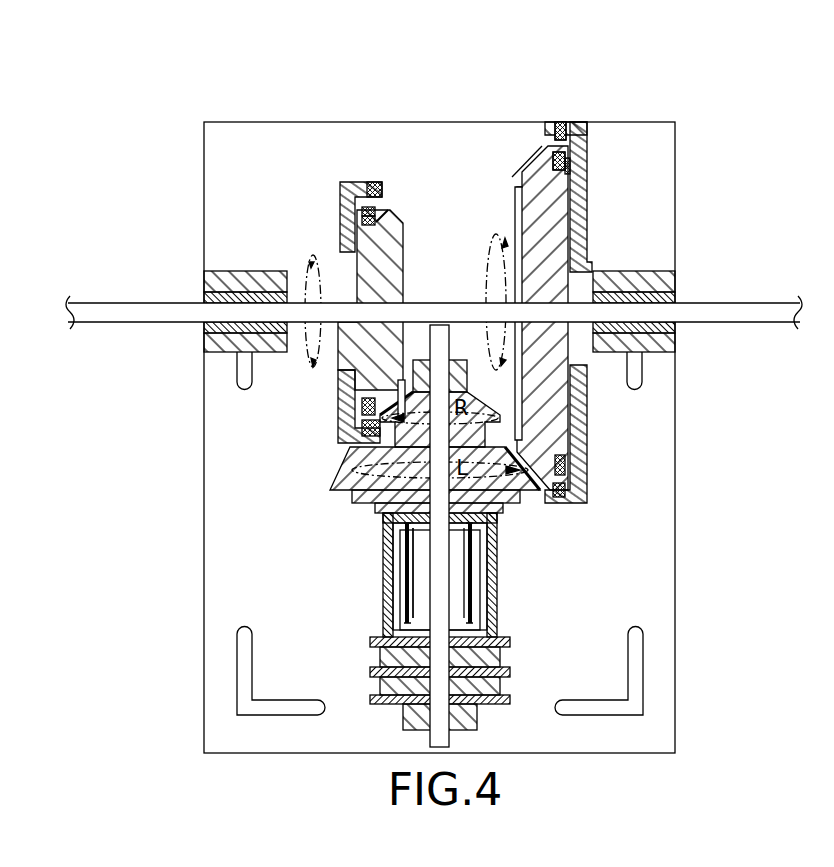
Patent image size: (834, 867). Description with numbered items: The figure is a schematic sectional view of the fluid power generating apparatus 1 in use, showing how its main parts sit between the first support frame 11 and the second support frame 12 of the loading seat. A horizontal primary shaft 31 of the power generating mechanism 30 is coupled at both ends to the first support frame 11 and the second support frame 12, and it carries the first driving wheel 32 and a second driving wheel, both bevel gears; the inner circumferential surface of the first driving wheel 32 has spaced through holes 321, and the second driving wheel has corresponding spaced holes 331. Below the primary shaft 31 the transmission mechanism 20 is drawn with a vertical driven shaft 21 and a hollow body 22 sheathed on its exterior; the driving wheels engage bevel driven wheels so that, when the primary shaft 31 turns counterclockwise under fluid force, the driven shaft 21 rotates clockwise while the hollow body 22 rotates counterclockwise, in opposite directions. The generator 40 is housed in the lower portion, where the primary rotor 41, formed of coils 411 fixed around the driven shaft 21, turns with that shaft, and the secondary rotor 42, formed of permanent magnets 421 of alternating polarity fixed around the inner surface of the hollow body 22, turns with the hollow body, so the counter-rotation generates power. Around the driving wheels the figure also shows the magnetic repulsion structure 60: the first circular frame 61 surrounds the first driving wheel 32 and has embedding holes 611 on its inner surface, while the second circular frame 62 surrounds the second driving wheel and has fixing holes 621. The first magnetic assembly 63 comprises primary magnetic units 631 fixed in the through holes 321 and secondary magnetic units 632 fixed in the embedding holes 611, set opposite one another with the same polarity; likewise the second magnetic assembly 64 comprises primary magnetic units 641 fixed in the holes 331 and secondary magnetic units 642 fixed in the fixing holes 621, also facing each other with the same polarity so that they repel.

The fluid power generating apparatus 1 is at (90, 124).
The first support frame 11 is at (655, 355).
The second support frame 12 is at (236, 284).
The transmission mechanism 20 is at (302, 583).
The driven shaft 21 is at (440, 500).
The hollow body 22 is at (383, 598).
The power generating mechanism 30 is at (516, 136).
The primary shaft 31 is at (158, 310).
The first driving wheel 32 is at (392, 285).
The through holes 321 is at (377, 226).
The holes 331 is at (566, 165).
The generator 40 is at (478, 590).
The primary rotor 41 is at (347, 573).
The coils 411 is at (404, 560).
The secondary rotor 42 is at (395, 678).
The permanent magnets 421 is at (383, 626).
The magnetic repulsion structure 60 is at (328, 220).
The first circular frame 61 is at (341, 203).
The embedding holes 611 is at (371, 194).
The second circular frame 62 is at (584, 418).
The fixing holes 621 is at (557, 123).
The first magnetic assembly 63 is at (424, 117).
The primary magnetic units 631 is at (374, 215).
The secondary magnetic units 632 is at (371, 206).
The second magnetic assembly 64 is at (684, 115).
The primary magnetic units 641 is at (582, 168).
The secondary magnetic units 642 is at (568, 126).